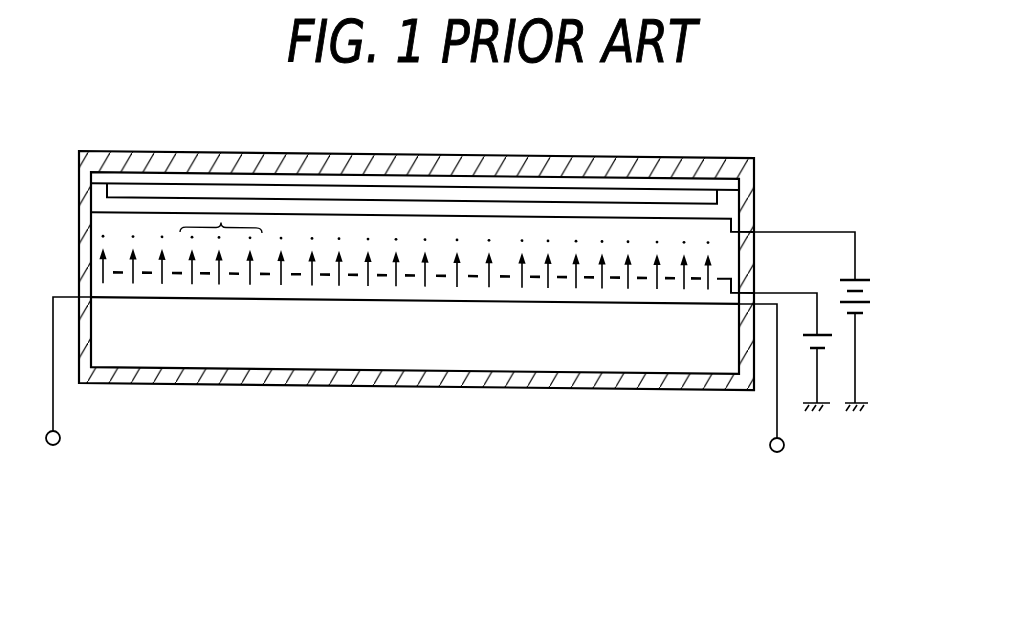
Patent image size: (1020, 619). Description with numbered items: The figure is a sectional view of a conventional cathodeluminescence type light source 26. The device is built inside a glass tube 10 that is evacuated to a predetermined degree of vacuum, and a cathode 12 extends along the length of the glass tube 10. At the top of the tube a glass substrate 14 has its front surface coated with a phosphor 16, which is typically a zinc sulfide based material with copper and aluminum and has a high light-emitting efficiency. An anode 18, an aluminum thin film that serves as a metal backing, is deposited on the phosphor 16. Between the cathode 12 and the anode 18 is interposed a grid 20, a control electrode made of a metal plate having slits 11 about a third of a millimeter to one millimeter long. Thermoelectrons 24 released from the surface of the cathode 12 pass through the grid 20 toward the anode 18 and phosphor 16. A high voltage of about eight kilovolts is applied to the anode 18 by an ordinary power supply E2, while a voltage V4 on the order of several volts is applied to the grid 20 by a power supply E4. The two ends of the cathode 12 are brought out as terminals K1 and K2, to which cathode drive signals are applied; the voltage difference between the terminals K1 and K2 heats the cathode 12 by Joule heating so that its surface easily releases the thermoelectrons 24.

The glass tube 10 is at (643, 372).
The slits 11 is at (192, 277).
The cathode 12 is at (318, 301).
The glass substrate 14 is at (487, 185).
The phosphor 16 is at (573, 200).
The anode 18 is at (641, 216).
The grid 20 is at (381, 273).
The thermoelectrons 24 is at (221, 221).
The flat display device 26 is at (595, 510).
The terminal K1 is at (765, 393).
The terminal K2 is at (65, 386).
The power supply E2 is at (856, 274).
The power supply E4 is at (807, 373).
The grid voltage V4 is at (785, 299).